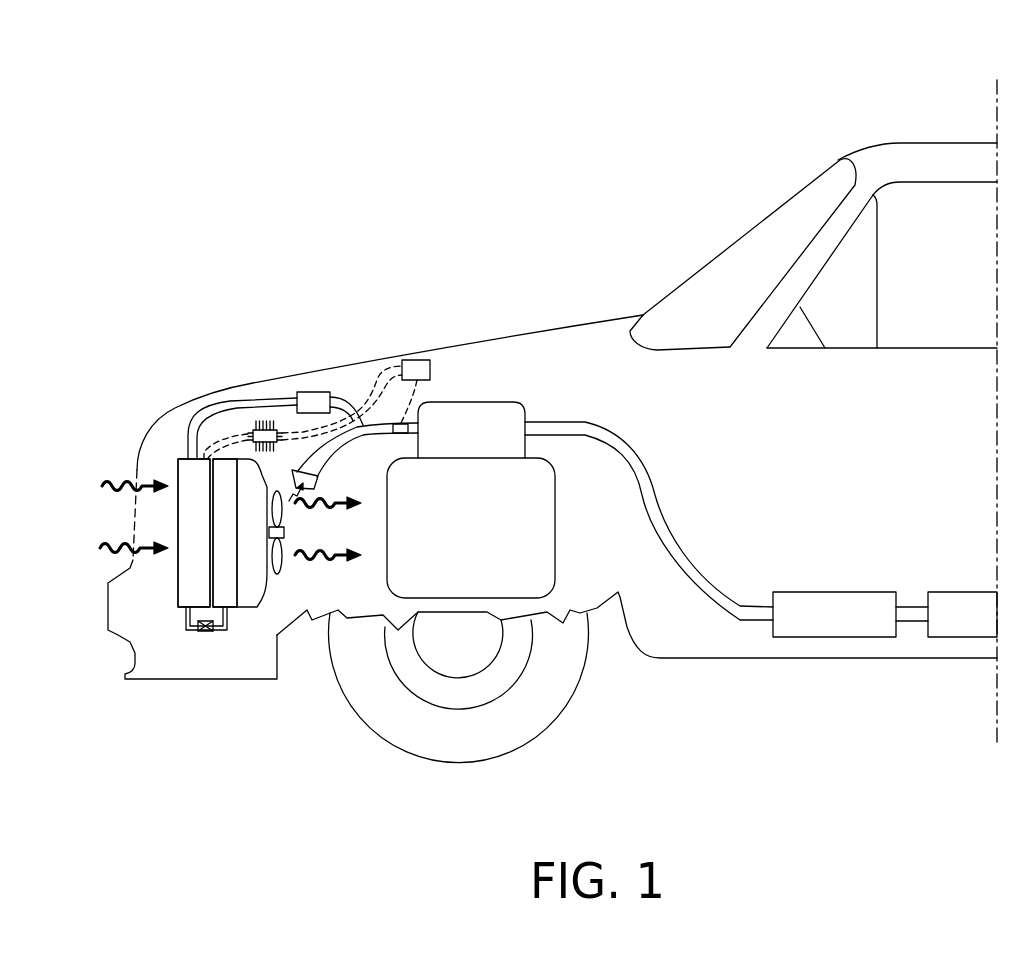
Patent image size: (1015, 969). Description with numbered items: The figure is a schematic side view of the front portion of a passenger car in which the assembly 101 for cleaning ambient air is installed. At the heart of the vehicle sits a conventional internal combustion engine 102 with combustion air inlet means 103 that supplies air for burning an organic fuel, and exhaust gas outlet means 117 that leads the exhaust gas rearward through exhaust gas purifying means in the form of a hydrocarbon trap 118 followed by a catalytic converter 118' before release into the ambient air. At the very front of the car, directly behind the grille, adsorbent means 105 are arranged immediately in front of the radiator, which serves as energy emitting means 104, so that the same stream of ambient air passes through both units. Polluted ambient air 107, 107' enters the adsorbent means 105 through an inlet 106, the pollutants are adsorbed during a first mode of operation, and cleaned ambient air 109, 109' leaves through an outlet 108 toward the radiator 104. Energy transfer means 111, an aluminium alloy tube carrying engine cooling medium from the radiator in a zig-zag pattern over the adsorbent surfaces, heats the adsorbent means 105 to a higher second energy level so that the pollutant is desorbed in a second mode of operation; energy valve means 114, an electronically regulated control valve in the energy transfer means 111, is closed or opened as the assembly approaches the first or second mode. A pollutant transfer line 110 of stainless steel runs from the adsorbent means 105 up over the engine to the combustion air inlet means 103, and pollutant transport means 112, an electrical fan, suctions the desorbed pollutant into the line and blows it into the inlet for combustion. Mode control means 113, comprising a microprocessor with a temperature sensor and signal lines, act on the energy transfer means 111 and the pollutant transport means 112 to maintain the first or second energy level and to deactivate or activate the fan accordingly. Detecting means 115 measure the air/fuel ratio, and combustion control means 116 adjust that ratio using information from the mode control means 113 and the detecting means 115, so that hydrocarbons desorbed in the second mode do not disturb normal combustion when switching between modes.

The assembly 101 is at (110, 357).
The internal combustion engine 102 is at (478, 408).
The combustion air inlet means 103 is at (372, 437).
The energy emitting means 104 is at (277, 635).
The adsorbent means 105 is at (178, 597).
The inlet 106 is at (177, 468).
The polluted ambient air 107 is at (106, 481).
The polluted ambient air 107' is at (100, 544).
The outlet 108 is at (210, 607).
The cleaned ambient air 109 is at (328, 576).
The cleaned ambient air 109' is at (332, 520).
The pollutant transfer line 110 is at (257, 403).
The energy transfer means 111 is at (185, 623).
The pollutant transport means 112 is at (312, 398).
The mode control means 113 is at (247, 437).
The energy valve means 114 is at (207, 630).
The detecting means 115 is at (390, 425).
The combustion control means 116 is at (417, 368).
The exhaust gas outlet means 117 is at (640, 440).
The hydrocarbon trap 118 is at (850, 650).
The catalytic converter 118' is at (957, 652).